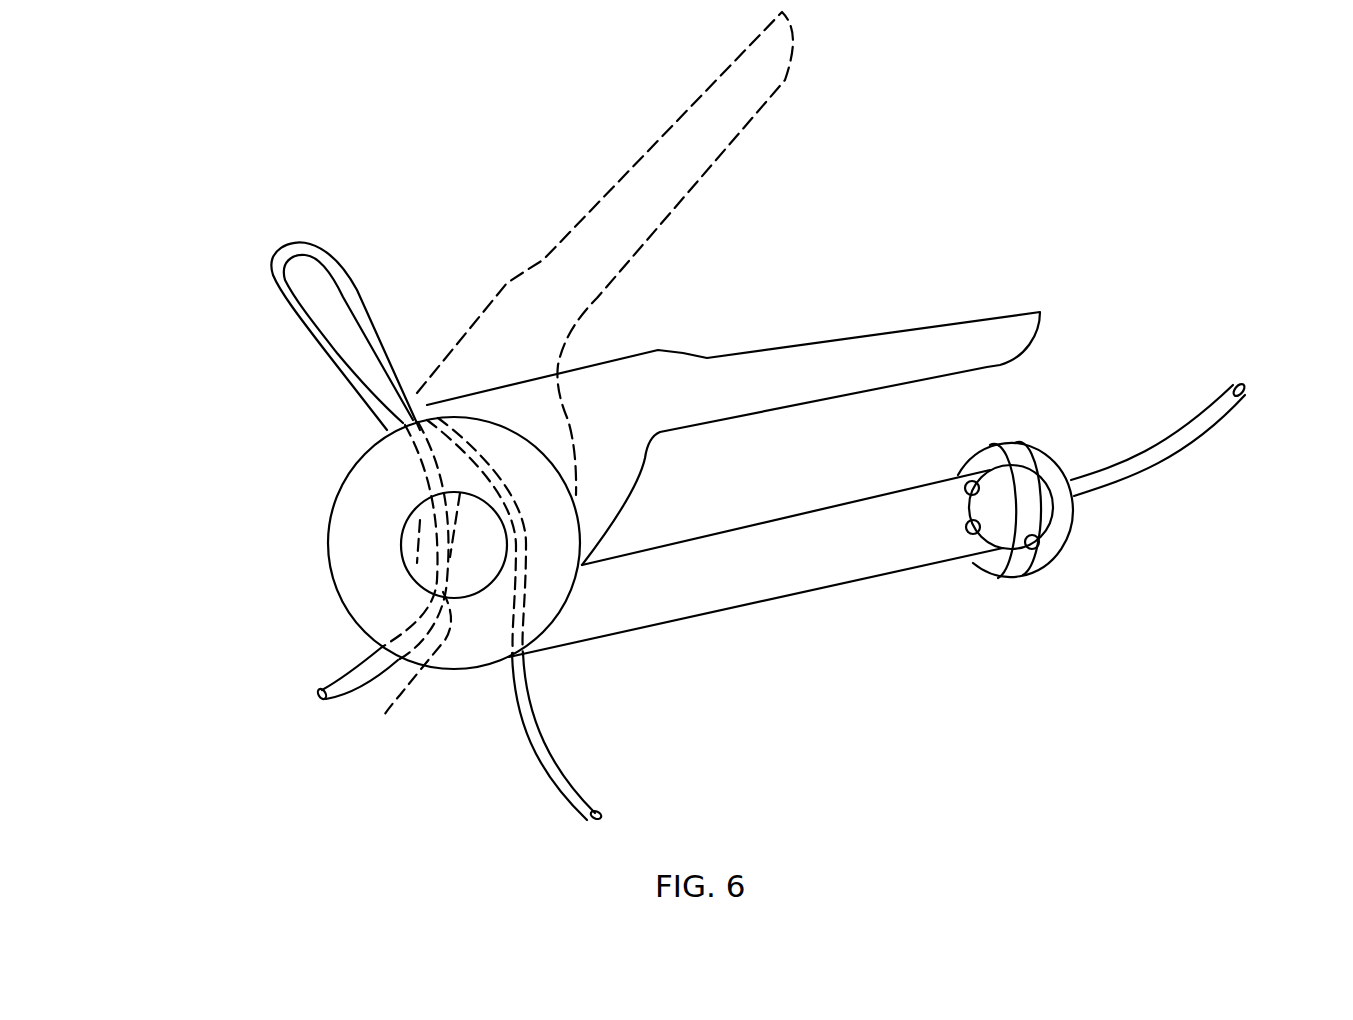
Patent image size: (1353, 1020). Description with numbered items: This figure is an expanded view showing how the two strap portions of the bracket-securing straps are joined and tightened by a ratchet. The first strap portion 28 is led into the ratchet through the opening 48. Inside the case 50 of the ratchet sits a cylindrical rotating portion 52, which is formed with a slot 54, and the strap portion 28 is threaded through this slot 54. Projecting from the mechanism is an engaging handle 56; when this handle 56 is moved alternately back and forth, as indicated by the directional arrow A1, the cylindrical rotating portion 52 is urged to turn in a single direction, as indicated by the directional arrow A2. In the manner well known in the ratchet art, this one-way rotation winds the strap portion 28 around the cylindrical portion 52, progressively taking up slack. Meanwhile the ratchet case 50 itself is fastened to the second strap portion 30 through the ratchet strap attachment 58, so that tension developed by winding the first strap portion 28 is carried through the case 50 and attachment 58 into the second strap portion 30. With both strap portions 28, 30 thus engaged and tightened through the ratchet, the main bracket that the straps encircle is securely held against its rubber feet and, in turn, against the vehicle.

The opening 48 is at (295, 580).
The cylindrical rotating portion 52 is at (358, 525).
The engaging handle 56 is at (653, 187).
The directional arrow A1 is at (848, 64).
The case 50 is at (717, 588).
The ratchet strap attachment 58 is at (1053, 555).
The strap portion 30 is at (1200, 435).
The strap portion 28 is at (350, 672).
The slot 54 is at (383, 718).
The directional arrow A2 is at (412, 687).